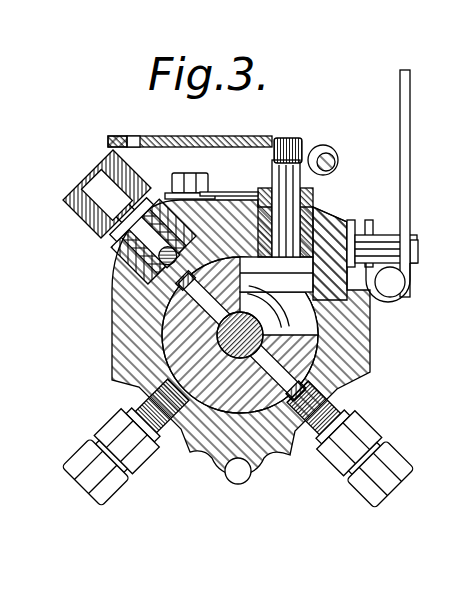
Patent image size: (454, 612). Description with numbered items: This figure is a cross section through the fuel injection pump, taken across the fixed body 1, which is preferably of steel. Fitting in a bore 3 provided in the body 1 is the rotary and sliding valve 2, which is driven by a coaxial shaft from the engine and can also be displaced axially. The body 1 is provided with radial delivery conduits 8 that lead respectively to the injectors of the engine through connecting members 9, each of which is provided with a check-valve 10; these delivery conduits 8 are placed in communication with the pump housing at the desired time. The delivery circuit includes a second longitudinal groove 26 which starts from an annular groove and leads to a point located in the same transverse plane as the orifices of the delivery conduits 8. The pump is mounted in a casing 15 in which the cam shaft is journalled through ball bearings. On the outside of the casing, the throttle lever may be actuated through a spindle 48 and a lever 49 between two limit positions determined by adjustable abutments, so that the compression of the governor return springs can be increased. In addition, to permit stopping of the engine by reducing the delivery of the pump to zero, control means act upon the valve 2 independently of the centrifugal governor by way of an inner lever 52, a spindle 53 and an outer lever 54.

The fixed body 1 is at (167, 357).
The rotary and sliding valve 2 is at (267, 327).
The bore 3 is at (273, 338).
The radial delivery conduits 8 is at (232, 365).
The connecting members 9 is at (110, 202).
The check-valves 10 is at (128, 272).
The casing 15 is at (277, 463).
The second longitudinal groove 26 is at (247, 294).
The spindle 48 is at (393, 250).
The lever 49 is at (404, 92).
The inner lever 52 is at (312, 250).
The spindle 53 is at (287, 212).
The outer lever 54 is at (245, 137).